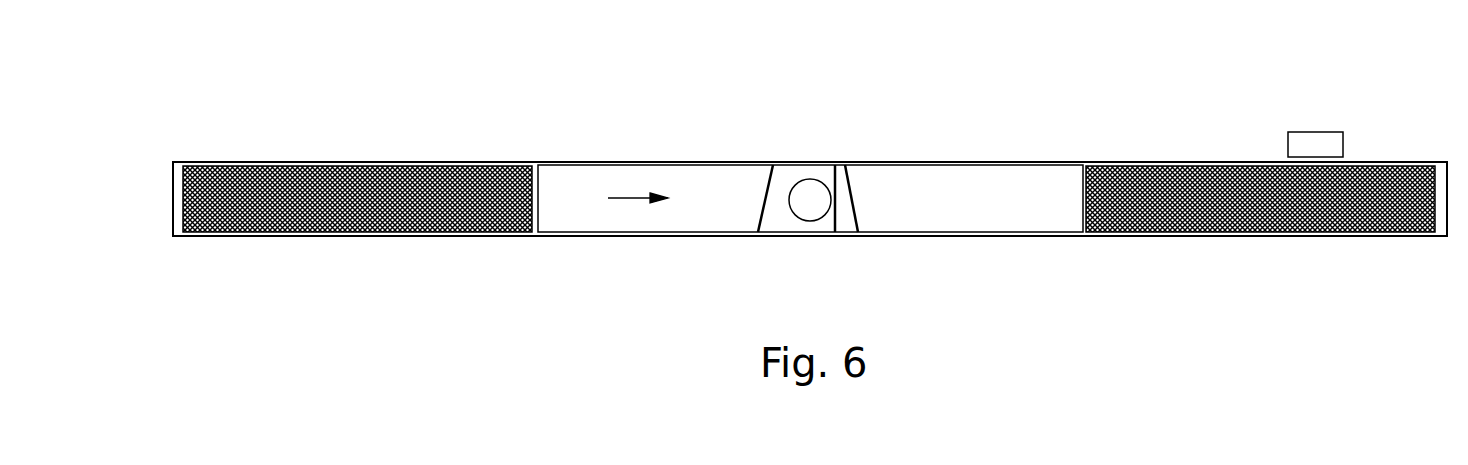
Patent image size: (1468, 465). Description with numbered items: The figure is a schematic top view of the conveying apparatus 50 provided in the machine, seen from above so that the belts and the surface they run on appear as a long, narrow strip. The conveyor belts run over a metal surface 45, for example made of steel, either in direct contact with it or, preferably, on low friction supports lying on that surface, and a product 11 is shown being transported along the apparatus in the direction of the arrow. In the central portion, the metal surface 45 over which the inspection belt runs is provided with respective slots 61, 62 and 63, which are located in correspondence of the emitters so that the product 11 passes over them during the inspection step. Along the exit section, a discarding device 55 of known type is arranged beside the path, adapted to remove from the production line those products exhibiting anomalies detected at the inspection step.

The microfluidic device 50 is at (226, 72).
The discarding device 55 is at (1313, 136).
The metal surface 45 is at (641, 220).
The product 11 is at (810, 190).
The slot 61 is at (858, 205).
The slot 62 is at (766, 189).
The slot 63 is at (835, 222).